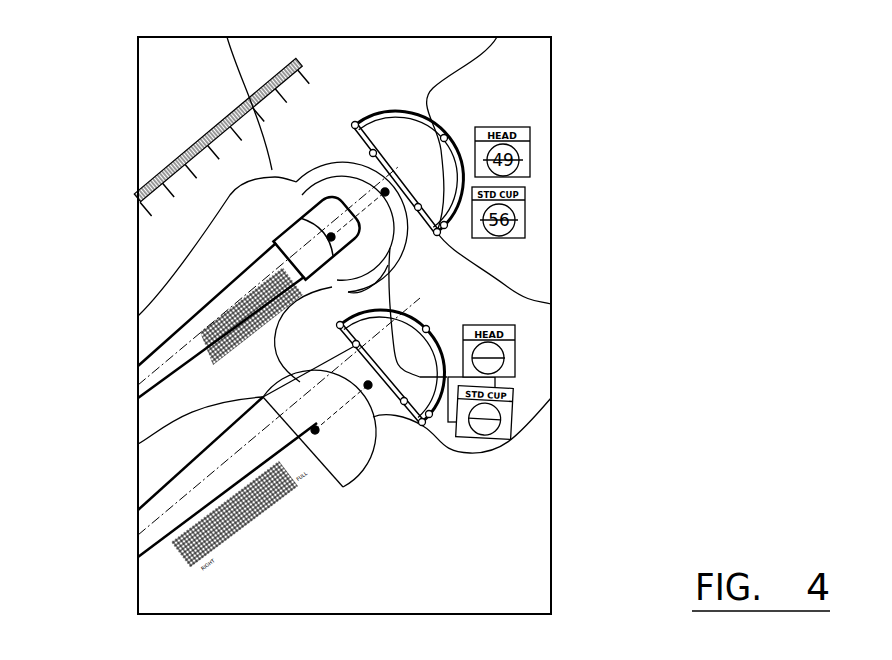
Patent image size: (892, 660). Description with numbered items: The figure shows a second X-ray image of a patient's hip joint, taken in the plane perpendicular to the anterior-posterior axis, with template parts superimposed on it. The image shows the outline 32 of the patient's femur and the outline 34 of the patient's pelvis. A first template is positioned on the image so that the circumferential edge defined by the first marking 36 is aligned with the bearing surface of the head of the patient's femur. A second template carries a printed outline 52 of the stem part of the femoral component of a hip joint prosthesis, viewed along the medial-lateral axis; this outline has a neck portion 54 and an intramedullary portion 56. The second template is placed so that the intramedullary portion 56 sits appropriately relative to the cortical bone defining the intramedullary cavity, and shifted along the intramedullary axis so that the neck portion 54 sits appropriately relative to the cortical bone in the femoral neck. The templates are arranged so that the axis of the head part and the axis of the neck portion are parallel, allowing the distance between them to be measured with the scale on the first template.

The outline of the patient's femur 32 is at (209, 282).
The outline of the patient's pelvis 34 is at (410, 80).
The first marking 36 is at (384, 254).
The outline of the stem part 52 is at (257, 258).
The neck portion 54 is at (280, 197).
The intramedullary portion 56 is at (172, 347).